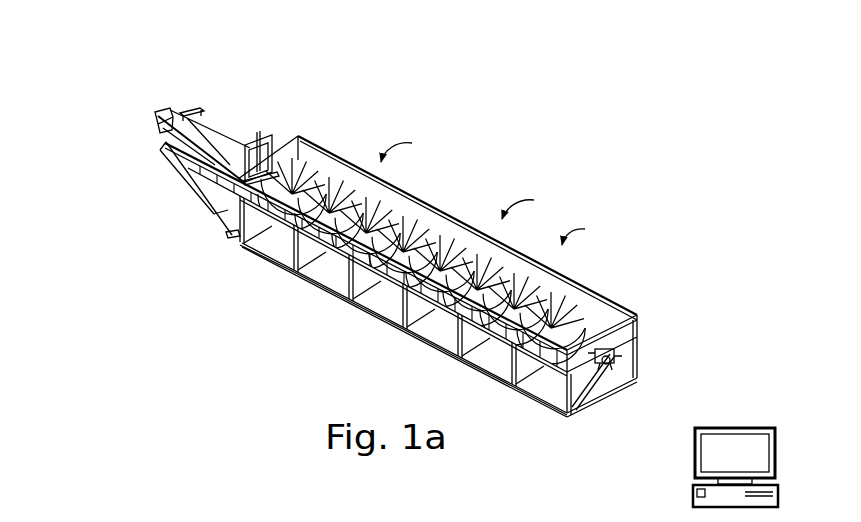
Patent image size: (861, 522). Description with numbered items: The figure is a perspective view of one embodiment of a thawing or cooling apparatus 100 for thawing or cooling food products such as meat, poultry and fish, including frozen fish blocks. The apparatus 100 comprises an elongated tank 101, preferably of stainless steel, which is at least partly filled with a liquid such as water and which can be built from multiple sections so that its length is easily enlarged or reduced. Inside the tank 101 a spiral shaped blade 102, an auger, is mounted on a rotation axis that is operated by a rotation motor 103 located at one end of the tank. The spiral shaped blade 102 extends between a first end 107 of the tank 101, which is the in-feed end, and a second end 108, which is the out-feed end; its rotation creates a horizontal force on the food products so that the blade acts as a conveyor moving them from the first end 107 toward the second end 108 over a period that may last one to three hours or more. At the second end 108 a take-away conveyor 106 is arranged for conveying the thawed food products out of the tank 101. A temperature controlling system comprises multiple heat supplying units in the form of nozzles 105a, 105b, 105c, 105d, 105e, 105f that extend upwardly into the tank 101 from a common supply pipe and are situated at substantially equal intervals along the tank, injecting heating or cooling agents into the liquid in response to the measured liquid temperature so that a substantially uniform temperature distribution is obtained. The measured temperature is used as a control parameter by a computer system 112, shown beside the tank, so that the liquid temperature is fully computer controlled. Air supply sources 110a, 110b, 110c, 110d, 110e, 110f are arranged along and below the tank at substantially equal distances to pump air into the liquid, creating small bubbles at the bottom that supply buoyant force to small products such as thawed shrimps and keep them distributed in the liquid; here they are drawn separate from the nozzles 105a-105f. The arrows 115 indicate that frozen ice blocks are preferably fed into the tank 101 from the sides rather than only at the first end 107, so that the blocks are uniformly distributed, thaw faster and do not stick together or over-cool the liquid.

The thawing or cooling apparatus 100 is at (112, 54).
The tank 101 is at (553, 273).
The spiral shaped blade 102 is at (583, 296).
The rotation motor 103 is at (572, 367).
The heat supplying unit (nozzle) 105a is at (550, 381).
The heat supplying unit (nozzle) 105b is at (497, 358).
The heat supplying unit (nozzle) 105c is at (440, 328).
The heat supplying unit (nozzle) 105d is at (382, 298).
The heat supplying unit (nozzle) 105e is at (323, 266).
The heat supplying unit (nozzle) 105f is at (278, 243).
The take-away conveyor 106 is at (197, 133).
The first end (in-feed end) 107 is at (647, 338).
The second end (out-feed end) 108 is at (150, 158).
The air supply source 110a is at (522, 404).
The air supply source 110b is at (472, 374).
The air supply source 110c is at (417, 347).
The air supply source 110d is at (360, 317).
The air supply source 110e is at (303, 286).
The air supply source 110f is at (254, 260).
The computer system 112 is at (693, 490).
The arrows 115 is at (441, 189).